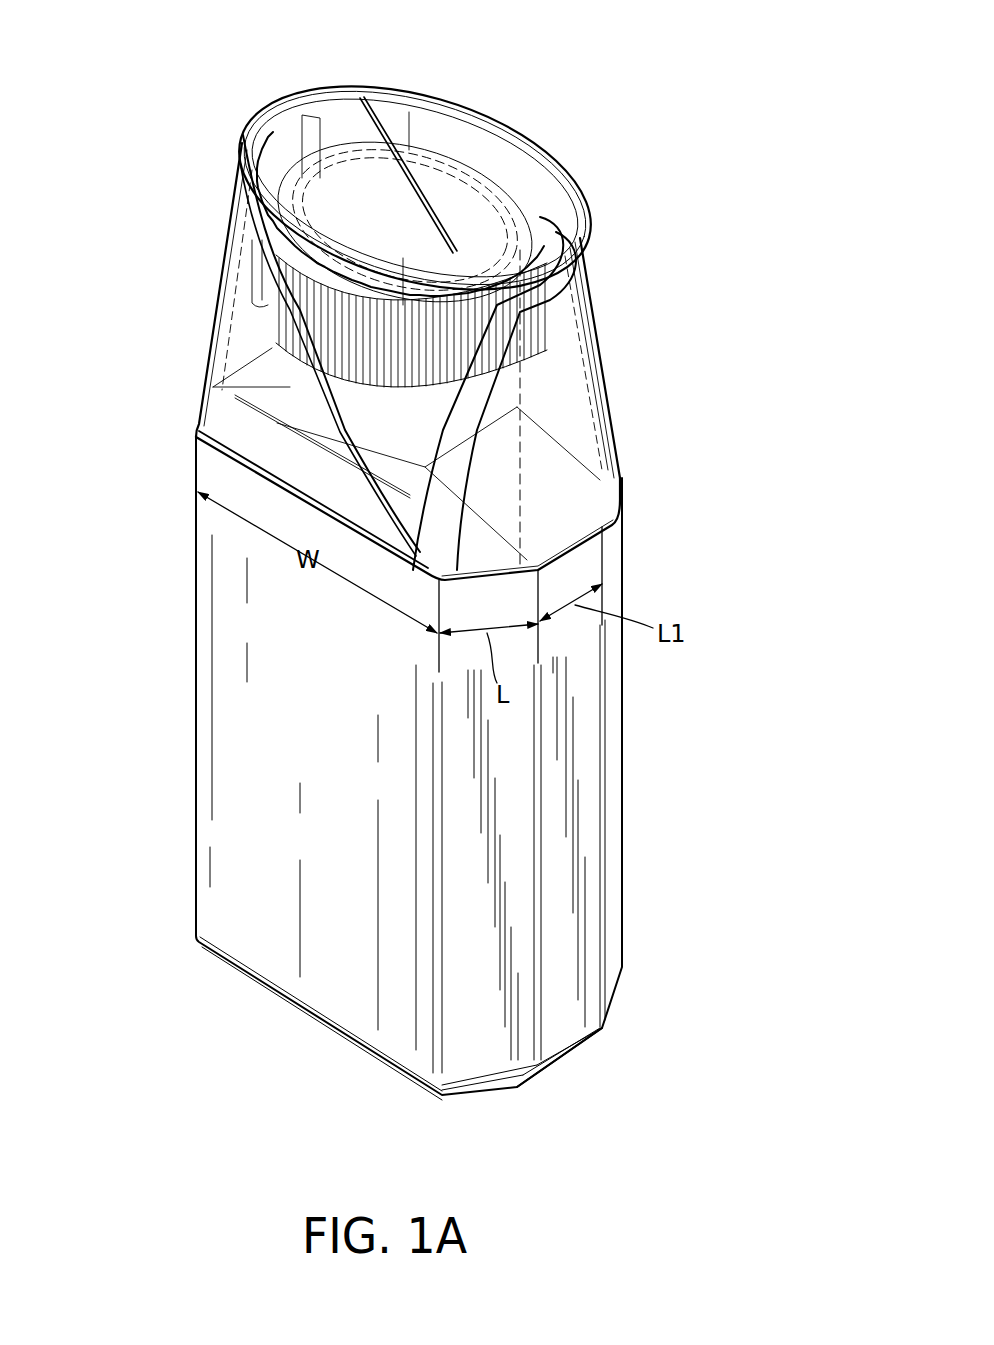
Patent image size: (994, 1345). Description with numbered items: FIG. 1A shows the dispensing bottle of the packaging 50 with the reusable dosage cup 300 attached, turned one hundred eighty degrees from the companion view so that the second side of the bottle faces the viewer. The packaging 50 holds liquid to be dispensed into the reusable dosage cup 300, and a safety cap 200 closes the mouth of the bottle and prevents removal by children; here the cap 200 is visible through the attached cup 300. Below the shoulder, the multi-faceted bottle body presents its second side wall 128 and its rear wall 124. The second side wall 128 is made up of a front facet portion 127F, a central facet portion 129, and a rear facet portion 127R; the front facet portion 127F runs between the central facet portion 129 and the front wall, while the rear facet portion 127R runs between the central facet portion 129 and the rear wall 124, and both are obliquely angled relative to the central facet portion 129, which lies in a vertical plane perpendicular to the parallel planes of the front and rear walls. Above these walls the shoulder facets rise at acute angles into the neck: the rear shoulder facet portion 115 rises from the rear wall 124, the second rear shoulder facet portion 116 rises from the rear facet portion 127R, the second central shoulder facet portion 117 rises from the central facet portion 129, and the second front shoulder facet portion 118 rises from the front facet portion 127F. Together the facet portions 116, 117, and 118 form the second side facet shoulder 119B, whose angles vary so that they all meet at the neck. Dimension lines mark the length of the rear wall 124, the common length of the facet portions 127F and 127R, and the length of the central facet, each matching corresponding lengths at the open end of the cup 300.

The packaging 50 is at (597, 237).
The reusable dosage cup 300 is at (598, 335).
The safety cap 200 is at (452, 212).
The second front shoulder facet portion 118 is at (565, 458).
The second side facet shoulder 119B is at (537, 497).
The second central shoulder facet portion 117 is at (593, 530).
The second rear shoulder facet portion 116 is at (480, 553).
The rear shoulder facet portion 115 is at (268, 465).
The second side wall 128 is at (575, 848).
The rear wall 124 is at (257, 955).
The front facet portion 127F is at (613, 963).
The rear facet portion 127R is at (488, 1043).
The central facet portion 129 is at (563, 1022).